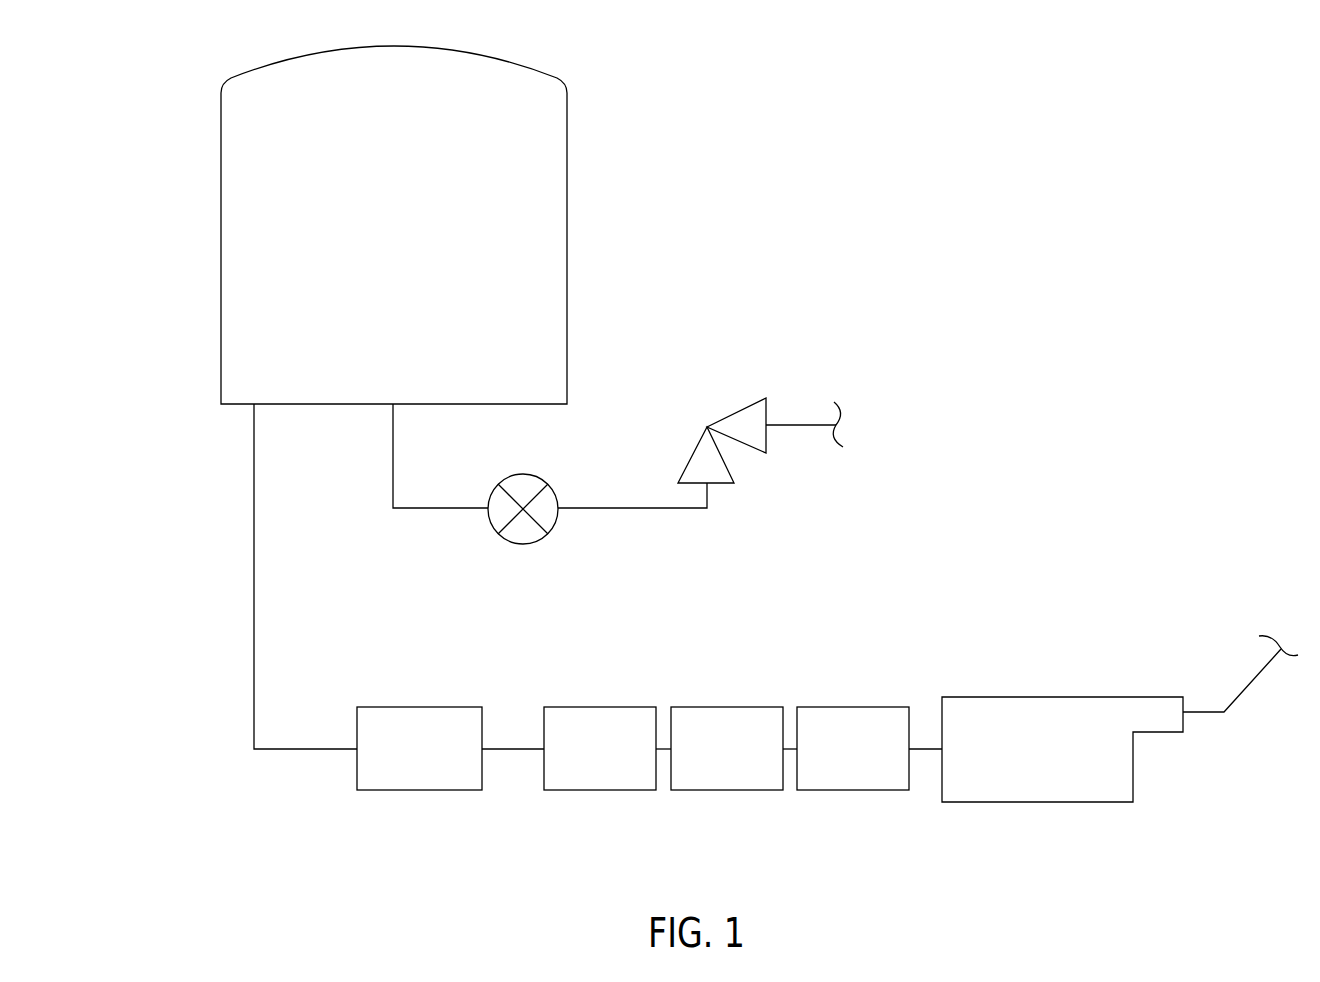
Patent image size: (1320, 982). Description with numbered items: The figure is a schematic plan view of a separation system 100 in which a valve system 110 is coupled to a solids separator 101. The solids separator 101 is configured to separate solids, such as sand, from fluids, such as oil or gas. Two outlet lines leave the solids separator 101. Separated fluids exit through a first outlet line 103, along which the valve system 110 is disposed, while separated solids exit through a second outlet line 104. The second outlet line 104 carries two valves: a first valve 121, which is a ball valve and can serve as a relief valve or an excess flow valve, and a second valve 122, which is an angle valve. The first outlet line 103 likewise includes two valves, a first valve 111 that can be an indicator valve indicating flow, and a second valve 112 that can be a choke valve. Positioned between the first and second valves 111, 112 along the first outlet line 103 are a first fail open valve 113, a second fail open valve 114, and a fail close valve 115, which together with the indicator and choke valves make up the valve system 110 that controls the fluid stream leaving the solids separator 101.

The separation system 100 is at (920, 100).
The solids separator 101 is at (567, 133).
The first outlet line 103 is at (254, 471).
The second outlet line 104 is at (393, 448).
The valve system 110 is at (311, 801).
The first valve 111 is at (382, 790).
The second valve 112 is at (1015, 697).
The first fail open valve 113 is at (595, 790).
The second fail open valve 114 is at (729, 790).
The fail close valve 115 is at (876, 790).
The first valve 121 is at (540, 476).
The second valve 122 is at (735, 410).